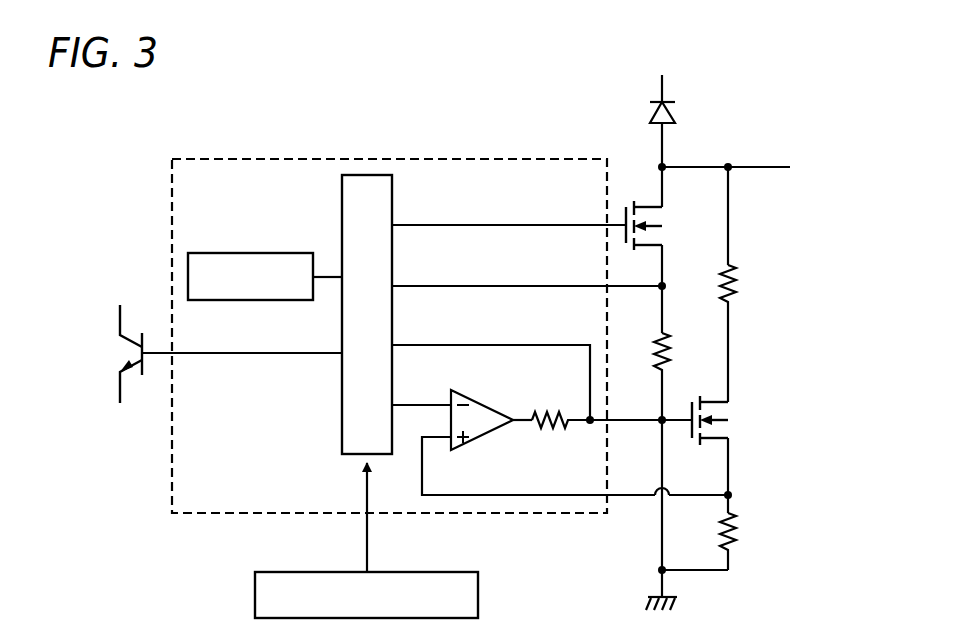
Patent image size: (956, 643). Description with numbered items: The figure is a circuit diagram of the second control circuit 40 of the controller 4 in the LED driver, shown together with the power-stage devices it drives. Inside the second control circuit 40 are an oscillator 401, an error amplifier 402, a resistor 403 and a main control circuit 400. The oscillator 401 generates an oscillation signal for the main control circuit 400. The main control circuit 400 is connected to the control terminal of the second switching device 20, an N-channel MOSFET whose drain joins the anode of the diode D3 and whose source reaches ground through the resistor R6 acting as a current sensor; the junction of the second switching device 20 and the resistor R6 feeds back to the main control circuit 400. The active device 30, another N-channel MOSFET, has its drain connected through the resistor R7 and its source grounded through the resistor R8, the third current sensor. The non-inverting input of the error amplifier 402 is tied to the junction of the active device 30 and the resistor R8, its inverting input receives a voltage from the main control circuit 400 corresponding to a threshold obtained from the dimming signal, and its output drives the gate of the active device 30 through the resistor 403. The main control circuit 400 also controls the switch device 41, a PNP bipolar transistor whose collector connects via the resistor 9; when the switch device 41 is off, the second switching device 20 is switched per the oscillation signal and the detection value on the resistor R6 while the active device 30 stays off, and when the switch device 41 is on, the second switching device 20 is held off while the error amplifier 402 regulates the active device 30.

The controller 4 is at (559, 147).
The second control circuit 40 is at (468, 158).
The switch device 41 is at (115, 354).
The second switching device 20 is at (660, 219).
The active device 30 is at (729, 413).
The main control circuit 400 is at (342, 397).
The oscillator 401 is at (254, 258).
The error amplifier 402 is at (482, 412).
The resistor 403 is at (553, 438).
The resistor 9 is at (478, 596).
The diode D3 is at (681, 141).
The resistor (second current sensor) R6 is at (683, 421).
The resistor R7 is at (747, 284).
The resistor (third current sensor) R8 is at (718, 504).